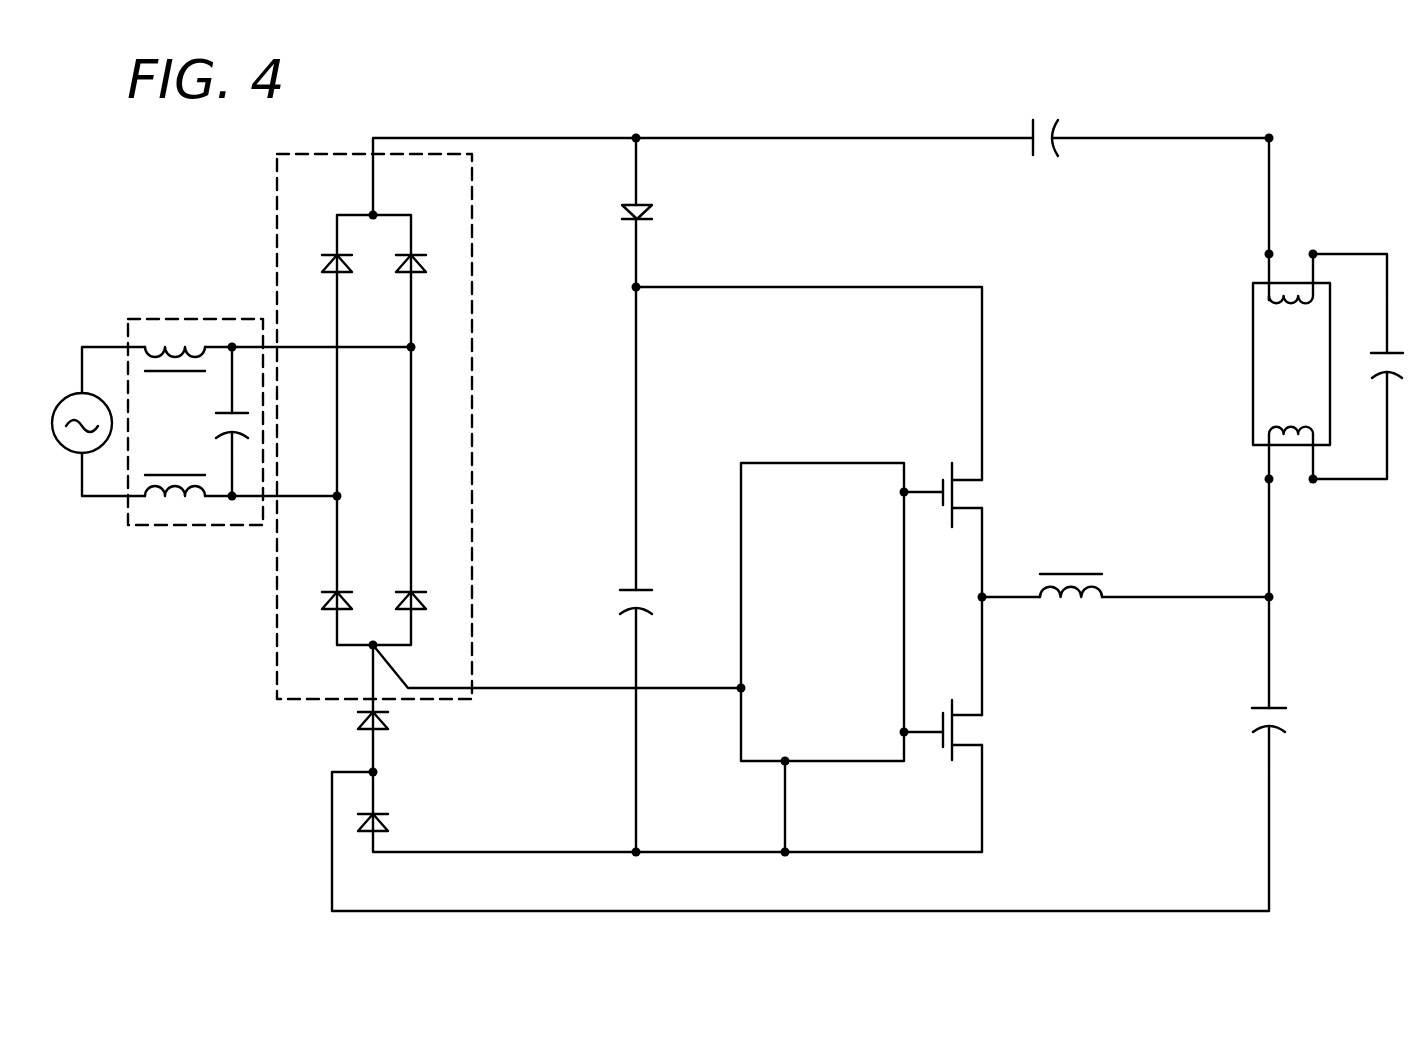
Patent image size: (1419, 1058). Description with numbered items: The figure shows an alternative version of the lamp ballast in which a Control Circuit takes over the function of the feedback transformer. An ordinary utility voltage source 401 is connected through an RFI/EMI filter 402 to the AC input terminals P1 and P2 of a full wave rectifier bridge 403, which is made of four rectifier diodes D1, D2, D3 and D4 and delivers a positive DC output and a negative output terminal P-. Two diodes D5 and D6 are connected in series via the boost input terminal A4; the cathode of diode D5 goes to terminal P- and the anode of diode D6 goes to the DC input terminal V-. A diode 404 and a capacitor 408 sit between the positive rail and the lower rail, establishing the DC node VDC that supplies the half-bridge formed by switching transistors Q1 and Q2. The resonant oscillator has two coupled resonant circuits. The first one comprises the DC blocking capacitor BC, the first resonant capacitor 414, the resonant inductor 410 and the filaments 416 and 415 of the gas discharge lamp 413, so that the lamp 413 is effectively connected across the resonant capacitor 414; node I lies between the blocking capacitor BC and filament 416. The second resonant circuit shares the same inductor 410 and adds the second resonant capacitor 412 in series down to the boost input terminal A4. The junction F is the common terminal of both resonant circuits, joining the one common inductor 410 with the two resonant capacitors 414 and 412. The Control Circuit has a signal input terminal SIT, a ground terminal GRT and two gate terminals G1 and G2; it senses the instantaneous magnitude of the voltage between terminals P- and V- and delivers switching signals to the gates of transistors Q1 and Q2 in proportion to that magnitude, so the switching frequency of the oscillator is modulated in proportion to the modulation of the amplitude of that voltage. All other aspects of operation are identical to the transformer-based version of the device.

The voltage source 401 is at (80, 405).
The RFI/EMI filter 402 is at (128, 347).
The full wave rectifier bridge 403 is at (277, 205).
The diode 404 is at (655, 210).
The capacitor 408 is at (650, 598).
The resonant inductor 410 is at (1075, 576).
The second resonant capacitor 412 is at (1280, 714).
The gas discharge lamp 413 is at (1252, 360).
The first resonant capacitor 414 is at (1382, 366).
The lamp filament 415 is at (1278, 427).
The lamp filament 416 is at (1305, 306).
The AC input terminal P1 is at (409, 349).
The AC input terminal P2 is at (334, 498).
The negative DC output terminal P- is at (370, 649).
The rectifier diode D1 is at (324, 262).
The rectifier diode D2 is at (397, 262).
The rectifier diode D3 is at (326, 600).
The rectifier diode D4 is at (395, 599).
The diode D5 is at (361, 716).
The diode D6 is at (391, 824).
The boost input terminal A4 is at (378, 772).
The DC input terminal V- is at (641, 856).
The DC voltage node VDC is at (640, 287).
The signal input terminal SIT is at (736, 690).
The ground terminal GRT is at (787, 764).
The switching transistor Q1 is at (966, 476).
The switching transistor Q2 is at (970, 714).
The gate terminal G1 is at (906, 495).
The gate terminal G2 is at (906, 735).
The junction F is at (1270, 598).
The DC blocking capacitor BC is at (1041, 152).
The node I is at (1272, 140).